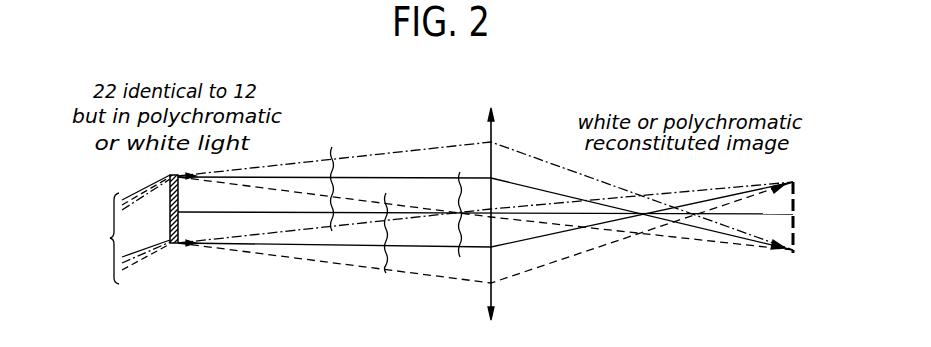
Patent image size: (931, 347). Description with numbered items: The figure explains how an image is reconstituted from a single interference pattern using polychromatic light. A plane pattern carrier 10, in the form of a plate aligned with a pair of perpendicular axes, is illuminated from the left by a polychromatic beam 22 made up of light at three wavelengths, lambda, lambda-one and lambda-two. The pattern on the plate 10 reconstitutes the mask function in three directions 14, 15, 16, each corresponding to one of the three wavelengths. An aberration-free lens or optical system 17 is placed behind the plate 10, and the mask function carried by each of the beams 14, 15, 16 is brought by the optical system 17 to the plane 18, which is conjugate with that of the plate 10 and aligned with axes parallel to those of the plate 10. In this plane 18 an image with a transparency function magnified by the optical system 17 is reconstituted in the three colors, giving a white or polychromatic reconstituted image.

The plane pattern carrier 10 is at (175, 245).
The first reconstituted direction 14 is at (332, 147).
The second reconstituted direction 15 is at (460, 257).
The third reconstituted direction 16 is at (386, 273).
The optical system 17 is at (491, 293).
The conjugate plane 18 is at (793, 253).
The polychromatic beam 22 is at (116, 282).